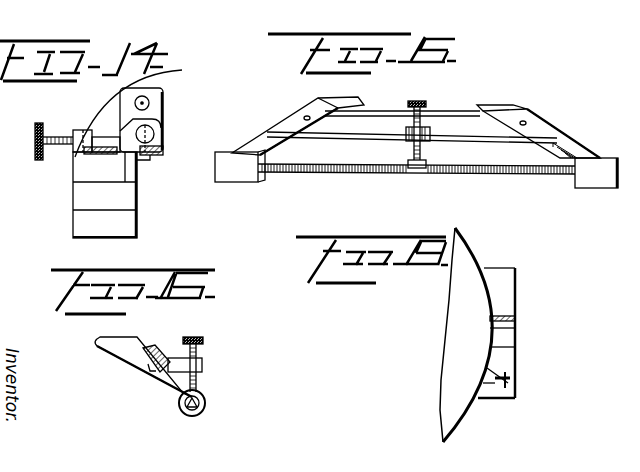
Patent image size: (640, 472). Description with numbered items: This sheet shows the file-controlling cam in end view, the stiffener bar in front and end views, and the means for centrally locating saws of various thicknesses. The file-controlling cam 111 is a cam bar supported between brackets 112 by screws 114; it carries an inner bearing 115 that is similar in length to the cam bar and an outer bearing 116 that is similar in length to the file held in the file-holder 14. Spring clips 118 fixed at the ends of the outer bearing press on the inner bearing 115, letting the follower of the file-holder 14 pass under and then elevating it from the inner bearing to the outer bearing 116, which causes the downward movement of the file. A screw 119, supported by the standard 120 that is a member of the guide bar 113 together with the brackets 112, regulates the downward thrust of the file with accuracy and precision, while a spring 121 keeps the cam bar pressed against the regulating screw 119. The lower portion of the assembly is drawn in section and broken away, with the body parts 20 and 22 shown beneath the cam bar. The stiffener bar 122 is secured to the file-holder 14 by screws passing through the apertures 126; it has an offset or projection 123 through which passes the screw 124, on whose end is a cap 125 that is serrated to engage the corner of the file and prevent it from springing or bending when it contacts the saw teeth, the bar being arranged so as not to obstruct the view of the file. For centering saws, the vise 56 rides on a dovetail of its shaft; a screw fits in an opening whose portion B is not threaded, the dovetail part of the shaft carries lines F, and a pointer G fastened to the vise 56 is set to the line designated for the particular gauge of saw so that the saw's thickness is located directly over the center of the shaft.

In FIG. 15, the file-holder 14 is at (326, 103).
In FIG. 16, the file-holder 14 is at (117, 355).
In FIG. 14, the base body 20 is at (80, 226).
In FIG. 14, the body section 22 is at (80, 197).
In FIG. 19, the vise 56 is at (467, 258).
In FIG. 14, the file-controlling cam 111 is at (165, 119).
In FIG. 14, the brackets 112 is at (148, 110).
In FIG. 14, the guide bar 113 is at (127, 178).
In FIG. 14, the screws 114 is at (150, 98).
In FIG. 14, the inner bearing 115 is at (165, 135).
In FIG. 15, the inner bearing 115 is at (442, 0).
In FIG. 14, the outer bearing 116 is at (165, 152).
In FIG. 14, the spring clips 118 is at (148, 154).
In FIG. 14, the screw 119 is at (50, 136).
In FIG. 14, the standard 120 is at (80, 129).
In FIG. 14, the spring 121 is at (108, 157).
In FIG. 15, the stiffener bar 122 is at (440, 111).
In FIG. 16, the stiffener bar 122 is at (157, 346).
In FIG. 15, the offset or projection 123 is at (425, 146).
In FIG. 16, the offset or projection 123 is at (203, 367).
In FIG. 15, the screw 124 is at (410, 148).
In FIG. 16, the screw 124 is at (205, 343).
In FIG. 15, the cap 125 is at (426, 164).
In FIG. 16, the cap 125 is at (166, 414).
In FIG. 15, the apertures 126 is at (304, 118).
In FIG. 19, the portion B is at (498, 293).
In FIG. 19, the lines F is at (511, 377).
In FIG. 19, the pointer G is at (497, 389).